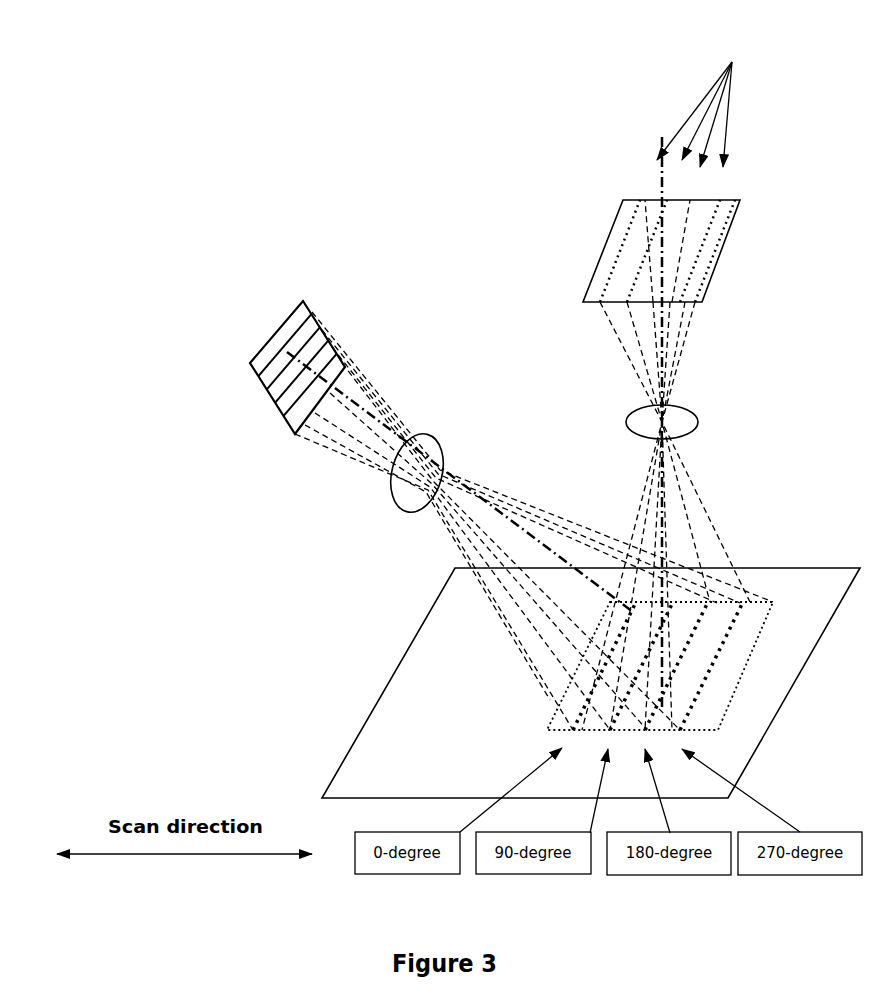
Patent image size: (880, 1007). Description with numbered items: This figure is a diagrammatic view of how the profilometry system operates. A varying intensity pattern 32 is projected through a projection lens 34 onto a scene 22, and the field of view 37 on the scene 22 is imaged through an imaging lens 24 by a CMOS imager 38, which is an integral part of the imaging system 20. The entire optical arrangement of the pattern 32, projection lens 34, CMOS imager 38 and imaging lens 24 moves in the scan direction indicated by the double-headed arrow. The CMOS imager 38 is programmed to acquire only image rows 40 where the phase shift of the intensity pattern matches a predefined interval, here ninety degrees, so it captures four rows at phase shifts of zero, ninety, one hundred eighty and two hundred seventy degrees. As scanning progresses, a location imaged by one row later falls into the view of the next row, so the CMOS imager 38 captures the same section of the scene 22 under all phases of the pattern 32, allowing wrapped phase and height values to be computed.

The imaging system 20 is at (627, 390).
The scene 22 is at (415, 727).
The imaging lens 24 is at (705, 412).
The varying intensity pattern 32 is at (248, 397).
The projection lens 34 is at (373, 498).
The field of view 37 is at (557, 686).
The CMOS imager 38 is at (607, 207).
The image rows 40 is at (709, 93).